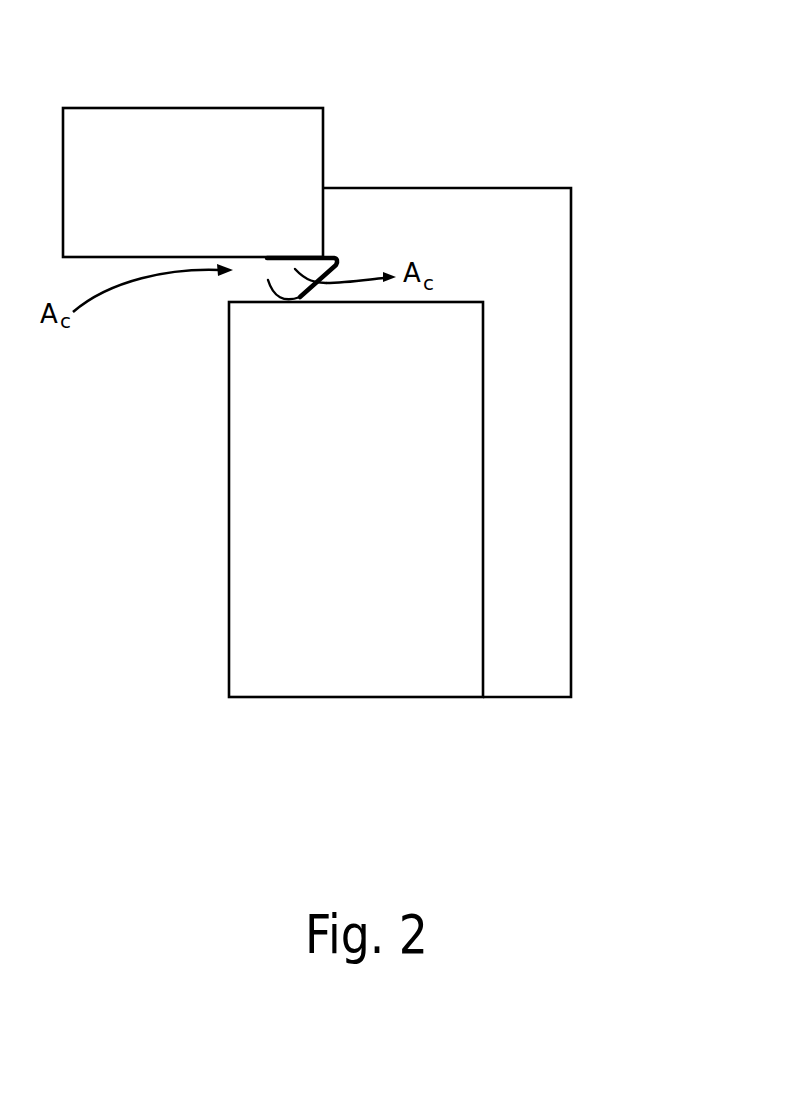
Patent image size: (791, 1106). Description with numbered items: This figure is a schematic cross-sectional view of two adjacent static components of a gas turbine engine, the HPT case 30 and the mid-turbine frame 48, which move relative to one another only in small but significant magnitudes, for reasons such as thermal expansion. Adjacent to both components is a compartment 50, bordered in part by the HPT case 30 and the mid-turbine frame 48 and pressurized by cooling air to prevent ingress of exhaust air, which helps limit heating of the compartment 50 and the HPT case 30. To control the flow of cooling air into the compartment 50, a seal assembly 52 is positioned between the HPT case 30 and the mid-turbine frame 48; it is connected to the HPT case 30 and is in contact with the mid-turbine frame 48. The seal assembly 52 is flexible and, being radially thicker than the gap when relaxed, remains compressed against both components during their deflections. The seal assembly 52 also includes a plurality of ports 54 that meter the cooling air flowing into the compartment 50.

The HPT case 30 is at (198, 108).
The mid-turbine frame 48 is at (336, 698).
The compartment 50 is at (535, 567).
The seal assembly 52 is at (332, 255).
The ports 54 is at (333, 268).